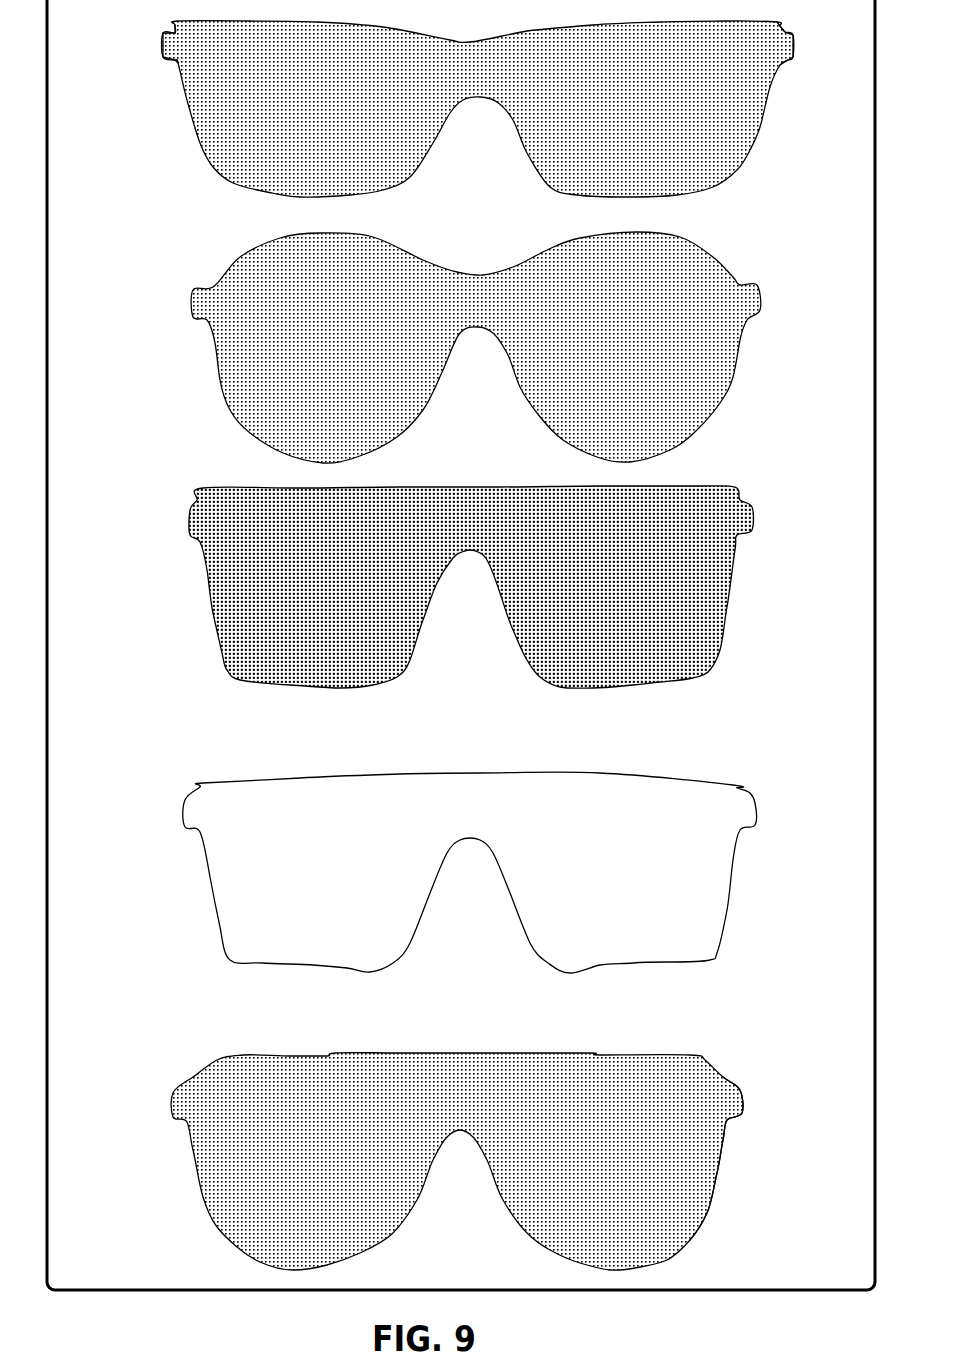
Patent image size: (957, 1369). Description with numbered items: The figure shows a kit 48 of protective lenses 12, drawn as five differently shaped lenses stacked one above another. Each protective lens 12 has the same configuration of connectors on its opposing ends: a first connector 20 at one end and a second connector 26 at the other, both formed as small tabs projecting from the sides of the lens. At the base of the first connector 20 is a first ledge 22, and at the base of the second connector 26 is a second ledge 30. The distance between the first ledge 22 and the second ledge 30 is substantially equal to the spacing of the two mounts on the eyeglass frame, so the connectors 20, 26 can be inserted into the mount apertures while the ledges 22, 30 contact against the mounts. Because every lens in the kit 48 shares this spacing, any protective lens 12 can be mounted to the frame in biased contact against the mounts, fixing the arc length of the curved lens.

The protective lens 12 is at (240, 160).
The second ledge 30 is at (163, 33).
The second connector 26 is at (163, 58).
The first ledge 22 is at (782, 27).
The first connector 20 is at (790, 60).
The kit 48 is at (767, 1020).